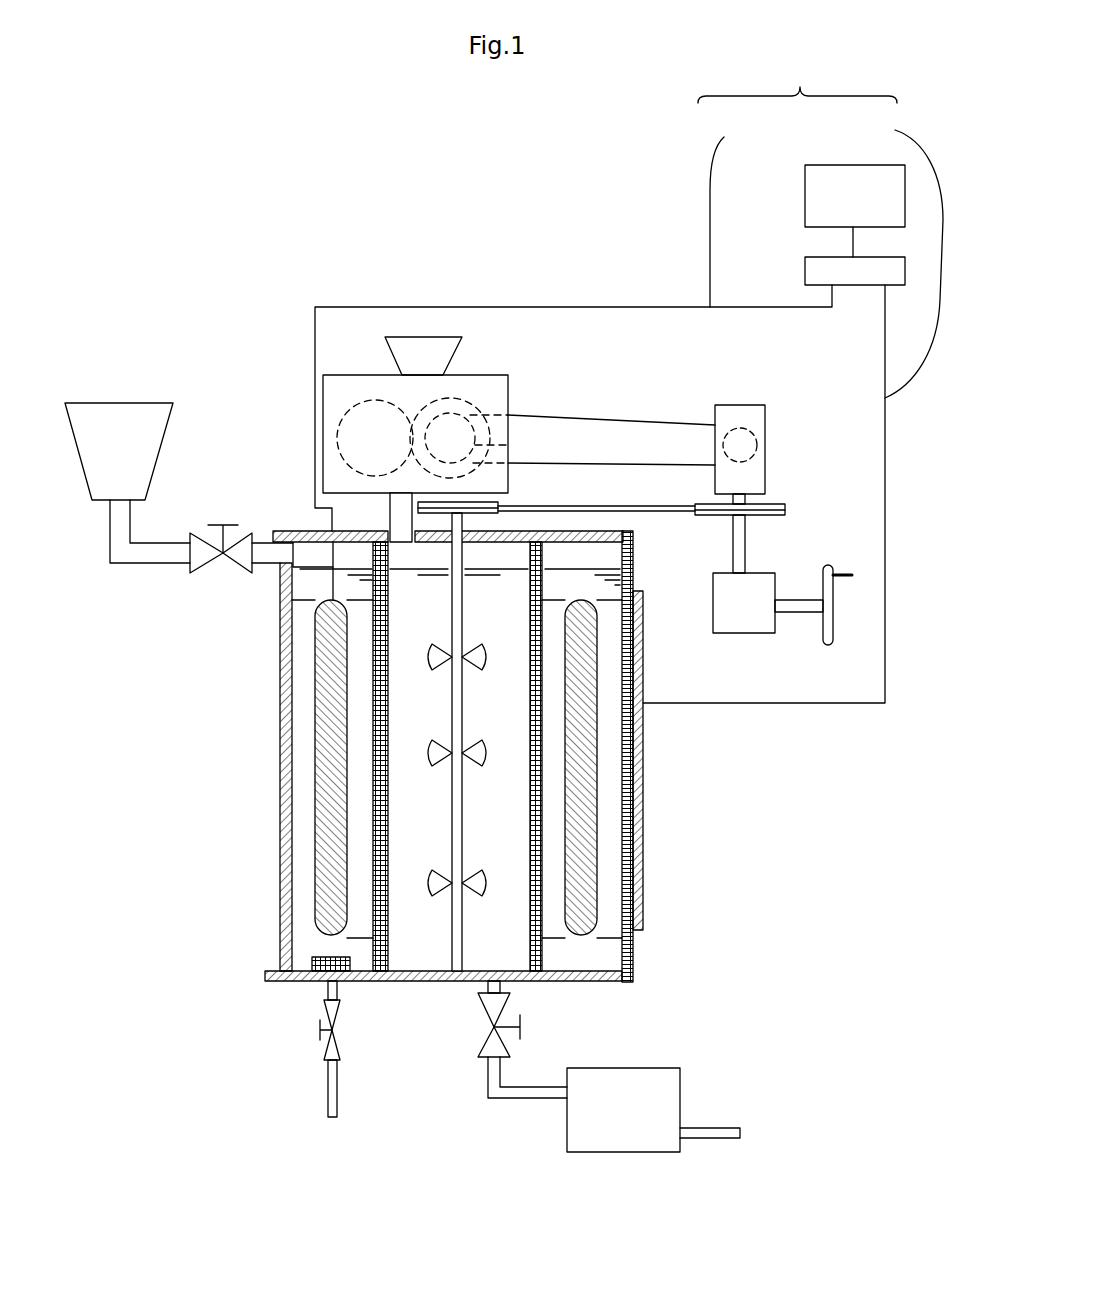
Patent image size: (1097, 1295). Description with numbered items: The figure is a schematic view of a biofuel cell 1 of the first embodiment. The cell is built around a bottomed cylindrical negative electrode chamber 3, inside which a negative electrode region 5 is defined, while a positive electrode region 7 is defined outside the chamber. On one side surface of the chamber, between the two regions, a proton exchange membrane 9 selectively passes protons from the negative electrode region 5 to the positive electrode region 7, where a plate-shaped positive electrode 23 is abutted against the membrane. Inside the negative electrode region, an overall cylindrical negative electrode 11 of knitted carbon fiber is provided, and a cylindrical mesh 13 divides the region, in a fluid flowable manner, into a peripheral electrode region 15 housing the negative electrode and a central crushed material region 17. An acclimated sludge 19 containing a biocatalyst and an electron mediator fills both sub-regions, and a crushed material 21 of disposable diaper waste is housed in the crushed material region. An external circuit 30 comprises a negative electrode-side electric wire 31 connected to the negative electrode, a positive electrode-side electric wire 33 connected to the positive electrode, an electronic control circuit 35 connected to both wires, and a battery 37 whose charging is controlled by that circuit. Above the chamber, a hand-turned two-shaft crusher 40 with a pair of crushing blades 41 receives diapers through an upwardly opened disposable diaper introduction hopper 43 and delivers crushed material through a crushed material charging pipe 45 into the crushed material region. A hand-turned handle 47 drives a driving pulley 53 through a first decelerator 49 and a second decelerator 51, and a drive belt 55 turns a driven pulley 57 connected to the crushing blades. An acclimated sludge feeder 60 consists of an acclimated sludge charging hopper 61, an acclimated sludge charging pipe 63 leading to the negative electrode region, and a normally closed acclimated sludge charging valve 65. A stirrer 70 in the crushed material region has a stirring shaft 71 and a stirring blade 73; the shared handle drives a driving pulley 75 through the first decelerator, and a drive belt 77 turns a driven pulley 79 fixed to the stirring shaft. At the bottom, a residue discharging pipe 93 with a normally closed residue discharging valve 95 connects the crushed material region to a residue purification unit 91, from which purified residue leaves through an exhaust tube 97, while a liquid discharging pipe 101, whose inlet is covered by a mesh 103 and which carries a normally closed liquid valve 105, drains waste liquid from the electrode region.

The biofuel cell 1 is at (205, 288).
The negative electrode chamber 3 is at (280, 833).
The negative electrode region 5 is at (362, 960).
The positive electrode region 7 is at (687, 764).
The proton exchange membrane 9 is at (633, 940).
The negative electrode 11 is at (323, 797).
The mesh 13 is at (388, 787).
The electrode region 15 is at (302, 553).
The crushed material region 17 is at (405, 957).
The acclimated sludge 19 is at (308, 588).
The crushed material 21 is at (517, 955).
The positive electrode 23 is at (638, 835).
The external circuit 30 is at (820, 227).
The negative electrode-side electric wire 31 is at (726, 208).
The positive electrode-side electric wire 33 is at (903, 254).
The electronic control circuit 35 is at (815, 272).
The battery 37 is at (843, 182).
The crusher 40 is at (429, 428).
The crushing blades 41 is at (433, 408).
The disposable diaper introduction hopper 43 is at (433, 352).
The crushed material charging pipe 45 is at (403, 507).
The hand-turned handle 47 is at (828, 575).
The first decelerator 49 is at (745, 613).
The second decelerator 51 is at (735, 418).
The driving pulley 53 is at (757, 445).
The drive belt 55 is at (648, 423).
The driven pulley 57 is at (475, 445).
The acclimated sludge feeder 60 is at (179, 498).
The acclimated sludge charging hopper 61 is at (108, 433).
The acclimated sludge charging pipe 63 is at (148, 552).
The acclimated sludge charging valve 65 is at (238, 555).
The stirrer 70 is at (461, 742).
The stirring shaft 71 is at (447, 675).
The stirring blade 73 is at (485, 662).
The driving pulley 75 is at (775, 500).
The drive belt 77 is at (600, 508).
The driven pulley 79 is at (482, 502).
The residue purification unit 91 is at (598, 1095).
The residue discharging pipe 93 is at (517, 1095).
The residue discharging valve 95 is at (483, 1008).
The exhaust tube 97 is at (700, 1138).
The liquid discharging pipe 101 is at (328, 988).
The mesh 103 is at (313, 958).
The liquid valve 105 is at (328, 1047).